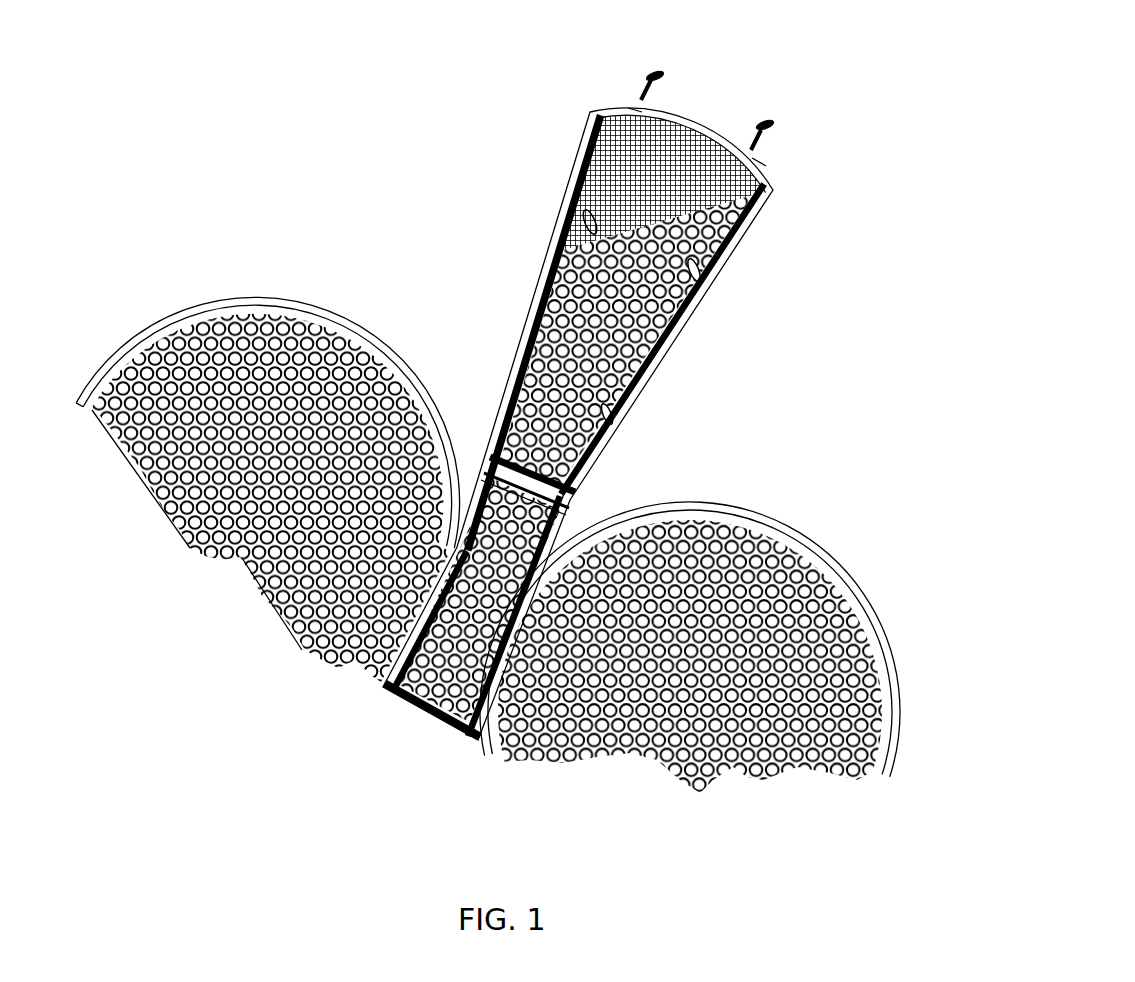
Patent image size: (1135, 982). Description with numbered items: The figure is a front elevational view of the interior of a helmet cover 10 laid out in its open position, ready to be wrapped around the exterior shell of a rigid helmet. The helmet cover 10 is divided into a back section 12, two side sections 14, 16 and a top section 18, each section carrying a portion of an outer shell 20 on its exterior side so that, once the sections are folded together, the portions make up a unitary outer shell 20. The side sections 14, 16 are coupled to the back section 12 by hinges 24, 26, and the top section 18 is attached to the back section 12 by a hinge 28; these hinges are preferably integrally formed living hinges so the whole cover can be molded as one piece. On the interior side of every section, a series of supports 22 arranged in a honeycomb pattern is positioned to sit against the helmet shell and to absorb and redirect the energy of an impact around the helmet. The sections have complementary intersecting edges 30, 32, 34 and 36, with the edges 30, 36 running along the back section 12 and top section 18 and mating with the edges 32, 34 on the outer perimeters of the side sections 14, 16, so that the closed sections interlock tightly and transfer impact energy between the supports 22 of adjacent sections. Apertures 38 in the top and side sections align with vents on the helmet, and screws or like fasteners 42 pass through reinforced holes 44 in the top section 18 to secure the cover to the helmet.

The helmet cover 10 is at (797, 38).
The back section 12 is at (438, 727).
The side section 14 is at (326, 303).
The side section 16 is at (858, 582).
The top section 18 is at (657, 395).
The outer shell 20 is at (138, 305).
The supports 22 is at (200, 472).
The hinge 24 is at (365, 660).
The hinge 26 is at (490, 728).
The hinge 28 is at (588, 456).
The intersecting edge 30 is at (487, 470).
The intersecting edge 32 is at (373, 335).
The intersecting edge 34 is at (780, 522).
The intersecting edge 36 is at (582, 172).
The apertures 38 is at (345, 512).
The fasteners 42 is at (650, 72).
The reinforced holes 44 is at (632, 105).